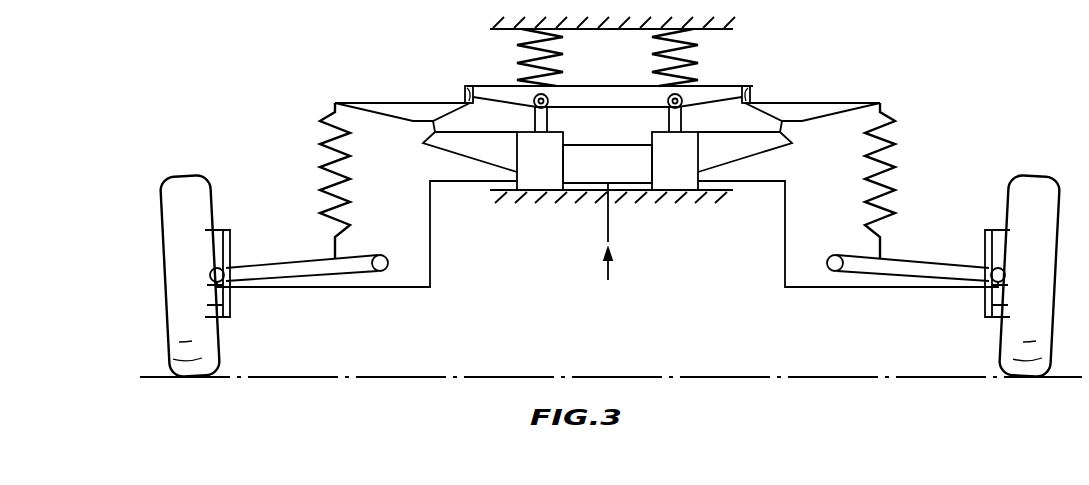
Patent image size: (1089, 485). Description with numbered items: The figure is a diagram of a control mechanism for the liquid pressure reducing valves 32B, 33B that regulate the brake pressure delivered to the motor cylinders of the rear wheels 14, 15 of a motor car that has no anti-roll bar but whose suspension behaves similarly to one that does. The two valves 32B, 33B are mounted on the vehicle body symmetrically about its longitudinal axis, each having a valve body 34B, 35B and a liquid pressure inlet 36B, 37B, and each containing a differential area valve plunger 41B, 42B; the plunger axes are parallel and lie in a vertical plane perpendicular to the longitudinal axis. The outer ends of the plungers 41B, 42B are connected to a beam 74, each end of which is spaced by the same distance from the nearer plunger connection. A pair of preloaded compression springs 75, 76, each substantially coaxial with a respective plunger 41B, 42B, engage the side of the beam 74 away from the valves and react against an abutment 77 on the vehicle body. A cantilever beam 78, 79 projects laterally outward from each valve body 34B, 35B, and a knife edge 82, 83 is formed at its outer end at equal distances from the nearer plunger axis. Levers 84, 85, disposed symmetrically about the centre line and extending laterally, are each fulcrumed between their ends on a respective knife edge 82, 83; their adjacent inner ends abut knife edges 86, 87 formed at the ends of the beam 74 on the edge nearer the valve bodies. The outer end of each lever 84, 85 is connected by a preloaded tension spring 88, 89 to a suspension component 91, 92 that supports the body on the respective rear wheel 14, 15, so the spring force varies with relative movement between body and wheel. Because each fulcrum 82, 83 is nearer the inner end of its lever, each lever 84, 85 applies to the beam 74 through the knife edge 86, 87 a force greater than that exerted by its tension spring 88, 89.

The rear wheel 14 is at (198, 343).
The rear wheel 15 is at (1013, 333).
The liquid pressure reducing valve 32B is at (555, 172).
The liquid pressure reducing valve 33B is at (693, 172).
The valve body 34B is at (542, 190).
The valve body 35B is at (677, 190).
The liquid pressure inlet 36B is at (567, 148).
The liquid pressure inlet 37B is at (650, 148).
The valve plunger 41B is at (545, 117).
The valve plunger 42B is at (670, 117).
The beam 74 is at (618, 95).
The preloaded compression spring 75 is at (518, 55).
The preloaded compression spring 76 is at (703, 61).
The abutment 77 is at (601, 29).
The cantilever beam 78 is at (470, 148).
The cantilever beam 79 is at (741, 148).
The knife edge 82 is at (428, 122).
The knife edge 83 is at (785, 122).
The lever 84 is at (398, 107).
The lever 85 is at (805, 107).
The knife edge 86 is at (469, 88).
The knife edge 87 is at (749, 92).
The preloaded tension spring 88 is at (348, 204).
The preloaded tension spring 89 is at (863, 203).
The suspension component 91 is at (288, 267).
The suspension component 92 is at (904, 267).